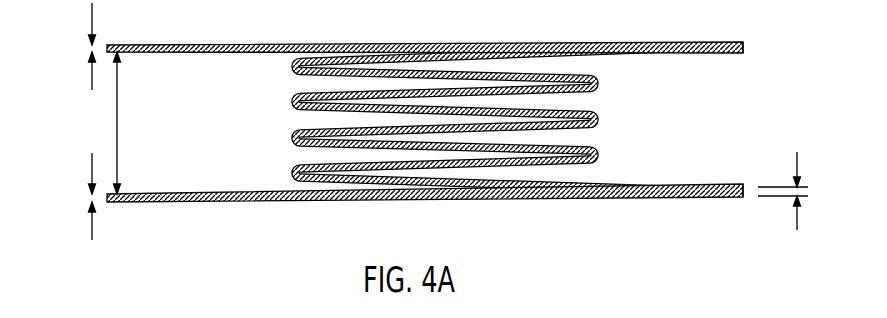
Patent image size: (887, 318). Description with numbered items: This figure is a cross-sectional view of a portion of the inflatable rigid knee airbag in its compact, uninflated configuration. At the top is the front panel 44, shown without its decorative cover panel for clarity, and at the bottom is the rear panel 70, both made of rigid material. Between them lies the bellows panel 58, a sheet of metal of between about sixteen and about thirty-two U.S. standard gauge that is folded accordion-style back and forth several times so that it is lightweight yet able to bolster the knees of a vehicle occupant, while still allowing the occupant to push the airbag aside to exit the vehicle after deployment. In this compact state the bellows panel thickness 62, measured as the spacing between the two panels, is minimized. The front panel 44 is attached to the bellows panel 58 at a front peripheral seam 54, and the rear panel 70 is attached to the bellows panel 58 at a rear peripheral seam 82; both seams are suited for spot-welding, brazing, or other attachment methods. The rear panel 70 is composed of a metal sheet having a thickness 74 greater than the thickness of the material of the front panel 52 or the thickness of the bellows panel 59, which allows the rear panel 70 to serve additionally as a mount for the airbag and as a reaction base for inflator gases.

The front panel 44 is at (202, 44).
The front peripheral seam 54 is at (710, 42).
The bellows panel 58 is at (294, 102).
The rear panel 70 is at (207, 203).
The rear peripheral seam 82 is at (711, 198).
The thickness of the material of the front panel 52 is at (89, 47).
The bellows panel thickness 62 is at (117, 121).
The thickness of the rear panel 74 is at (90, 197).
The thickness of the bellows panel 59 is at (797, 163).